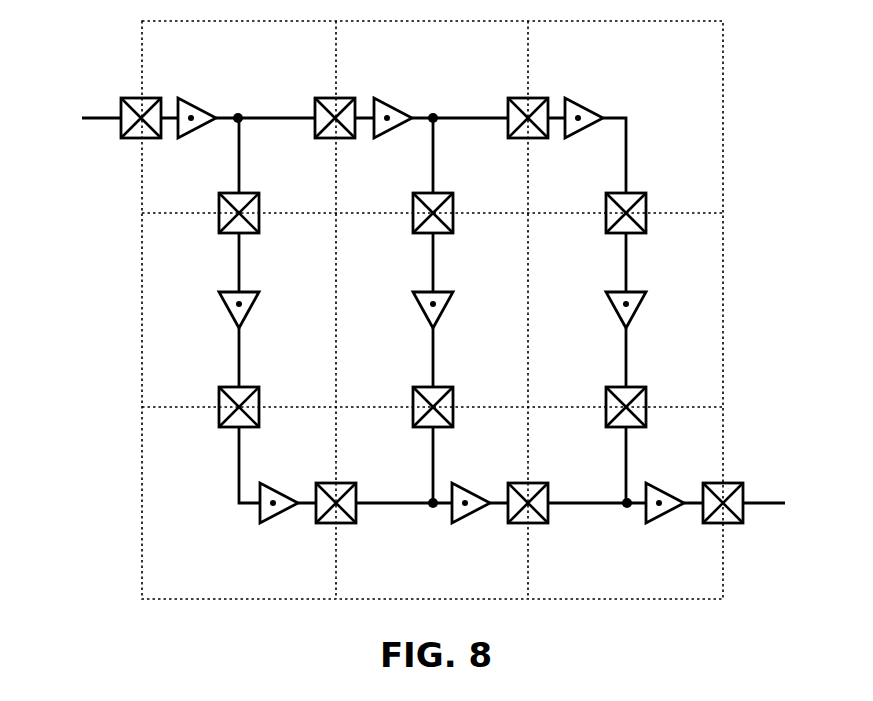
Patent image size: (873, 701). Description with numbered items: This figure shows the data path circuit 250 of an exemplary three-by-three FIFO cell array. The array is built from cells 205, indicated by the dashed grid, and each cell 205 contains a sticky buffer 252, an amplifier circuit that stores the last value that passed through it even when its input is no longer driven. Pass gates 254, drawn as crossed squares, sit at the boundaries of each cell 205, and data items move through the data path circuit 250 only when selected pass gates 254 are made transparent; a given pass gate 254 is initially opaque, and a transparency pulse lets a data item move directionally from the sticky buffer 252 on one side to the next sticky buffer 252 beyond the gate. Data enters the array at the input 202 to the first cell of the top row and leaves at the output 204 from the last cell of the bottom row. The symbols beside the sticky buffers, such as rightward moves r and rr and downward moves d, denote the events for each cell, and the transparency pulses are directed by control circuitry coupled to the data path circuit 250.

The input 202 is at (70, 118).
The output 204 is at (794, 503).
The cell 205 is at (721, 97).
The data path circuit 250 is at (468, 302).
The sticky buffer 252 is at (593, 108).
The pass gate 254 is at (507, 96).